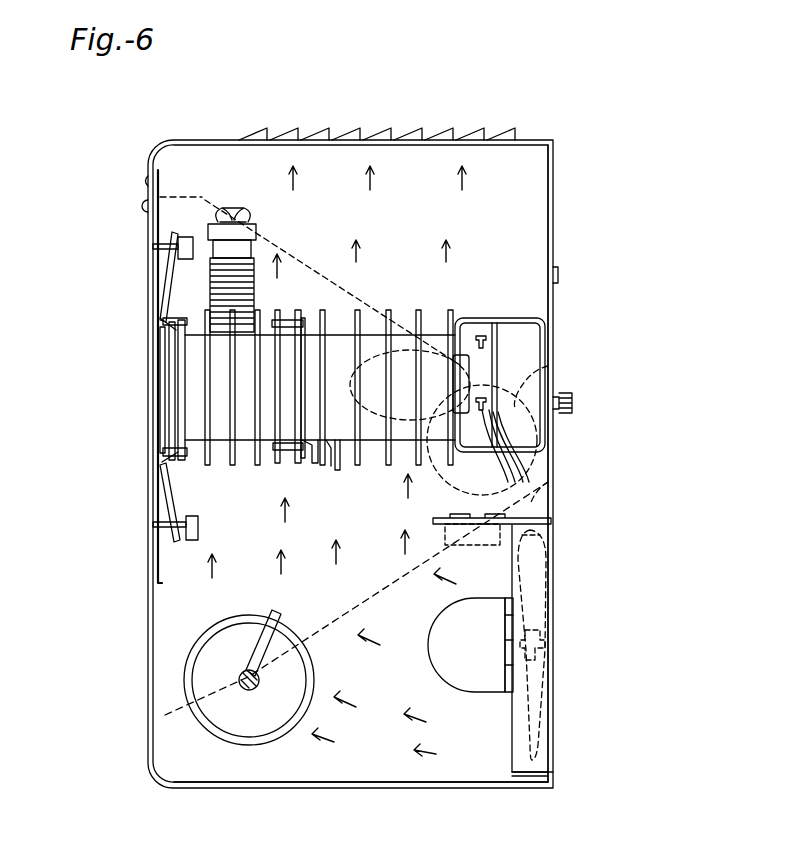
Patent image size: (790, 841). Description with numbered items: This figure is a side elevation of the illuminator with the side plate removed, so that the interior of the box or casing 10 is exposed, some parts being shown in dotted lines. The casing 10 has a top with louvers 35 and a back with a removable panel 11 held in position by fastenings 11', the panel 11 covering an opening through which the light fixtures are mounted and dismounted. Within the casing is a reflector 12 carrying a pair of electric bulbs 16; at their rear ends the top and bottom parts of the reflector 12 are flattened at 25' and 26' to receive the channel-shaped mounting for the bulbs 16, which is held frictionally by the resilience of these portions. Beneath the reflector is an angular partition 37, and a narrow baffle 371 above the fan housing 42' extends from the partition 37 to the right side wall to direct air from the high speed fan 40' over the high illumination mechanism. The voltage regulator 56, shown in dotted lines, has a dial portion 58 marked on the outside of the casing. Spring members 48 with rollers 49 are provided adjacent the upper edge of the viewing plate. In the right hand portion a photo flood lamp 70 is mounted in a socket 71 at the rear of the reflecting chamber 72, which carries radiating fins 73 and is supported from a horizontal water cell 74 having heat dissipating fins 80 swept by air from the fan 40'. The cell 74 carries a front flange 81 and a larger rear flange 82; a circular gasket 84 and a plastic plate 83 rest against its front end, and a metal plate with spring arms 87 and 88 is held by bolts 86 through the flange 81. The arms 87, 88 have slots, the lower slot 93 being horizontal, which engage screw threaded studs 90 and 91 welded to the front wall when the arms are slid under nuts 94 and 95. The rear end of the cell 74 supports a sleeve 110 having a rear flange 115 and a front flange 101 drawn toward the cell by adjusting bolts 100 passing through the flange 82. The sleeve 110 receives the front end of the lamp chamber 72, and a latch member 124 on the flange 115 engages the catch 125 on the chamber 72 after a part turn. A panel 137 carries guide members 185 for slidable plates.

The box or casing 10 is at (202, 138).
The removable panel 11 is at (580, 463).
The fastenings 11' is at (597, 398).
The reflector 12 is at (355, 607).
The electric bulbs 16 is at (466, 494).
The flattened rear portion of reflector top 25' is at (563, 375).
The flattened rear portion of reflector bottom 26' is at (573, 483).
The louvers 35 is at (505, 137).
The angular partition 37 is at (324, 770).
The air circulating fan 40' is at (525, 648).
The fan housing 42' is at (549, 794).
The spring members 48 is at (148, 181).
The roller 49 is at (142, 206).
The voltage regulator 56 is at (192, 688).
The dial portion 58 is at (190, 657).
The photo flood lamp 70 is at (418, 318).
The socket 71 is at (462, 360).
The reflecting chamber 72 is at (450, 310).
The radiating fins 73 is at (389, 310).
The water cell 74 is at (190, 358).
The heat dissipating fins 80 is at (205, 392).
The flange 81 is at (180, 432).
The flange member 82 is at (278, 310).
The plate 83 is at (162, 360).
The circular gasket 84 is at (170, 410).
The bolts 86 is at (172, 318).
The upper spring arm 87 is at (172, 272).
The lower spring arm 88 is at (172, 498).
The screw threaded stud 90 is at (160, 245).
The screw threaded stud 91 is at (166, 525).
The slot 93 is at (232, 270).
The nut 94 is at (185, 237).
The nut 95 is at (190, 541).
The adjusting screws or bolts 100 is at (300, 318).
The front flange 101 is at (302, 465).
The sleeve 110 is at (324, 310).
The rear flange 115 is at (359, 310).
The latch member 124 is at (343, 455).
The locking lug or catch 125 is at (328, 465).
The panel 137 is at (156, 590).
The guide member 185 is at (165, 452).
The narrow baffle 371 is at (433, 520).